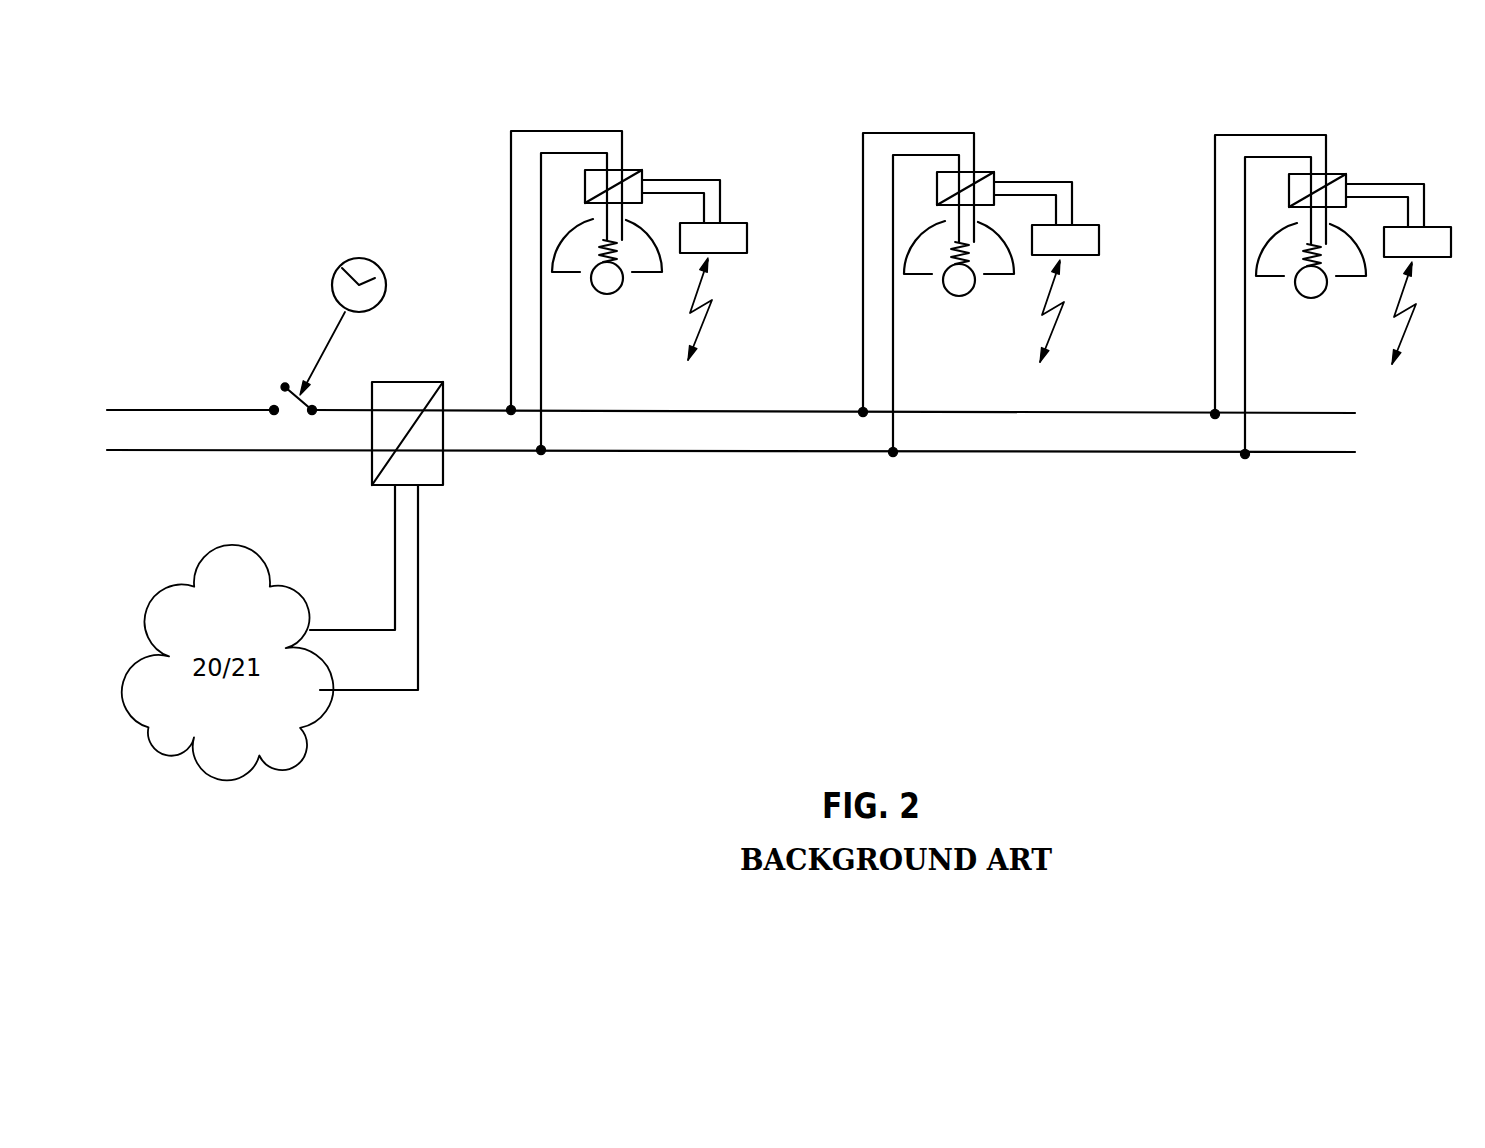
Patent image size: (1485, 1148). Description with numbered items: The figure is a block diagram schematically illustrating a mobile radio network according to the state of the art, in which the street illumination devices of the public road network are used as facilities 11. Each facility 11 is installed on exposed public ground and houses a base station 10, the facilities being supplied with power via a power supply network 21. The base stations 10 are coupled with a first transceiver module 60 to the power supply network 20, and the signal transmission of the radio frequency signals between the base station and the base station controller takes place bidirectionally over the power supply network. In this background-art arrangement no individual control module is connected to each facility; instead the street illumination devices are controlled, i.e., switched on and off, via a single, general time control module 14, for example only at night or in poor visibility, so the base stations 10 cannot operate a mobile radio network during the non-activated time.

The base station 10 is at (643, 170).
The facility 11 is at (553, 278).
The time control module 14 is at (373, 268).
The power supply network 20 is at (633, 451).
The power supply network 21 is at (159, 410).
The first transceiver module 60 is at (443, 487).